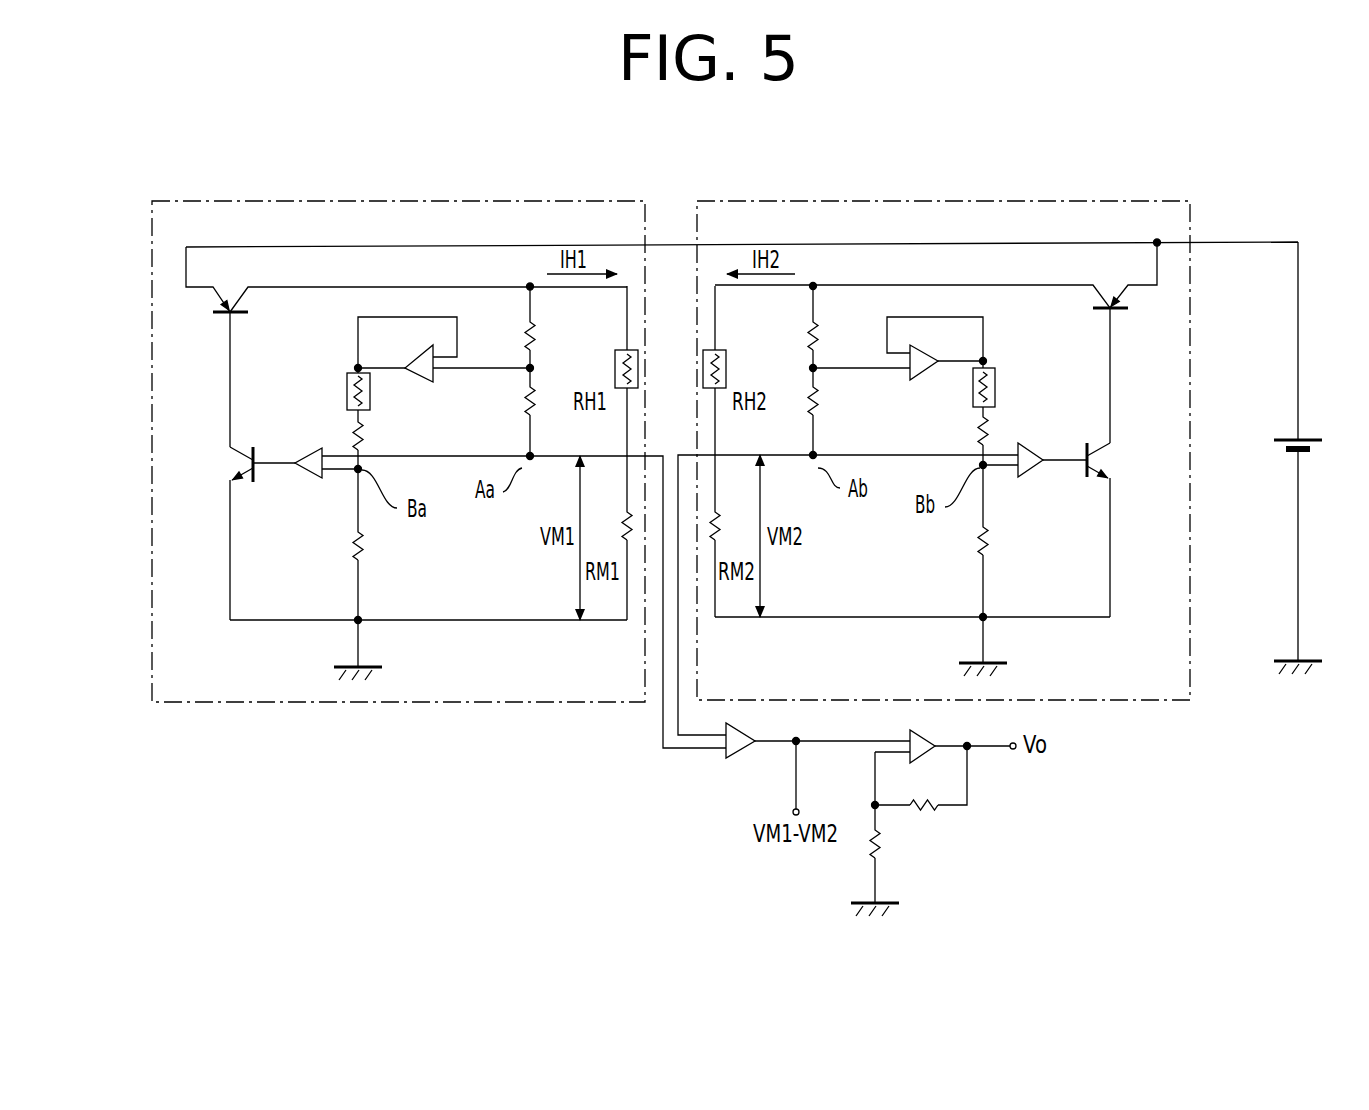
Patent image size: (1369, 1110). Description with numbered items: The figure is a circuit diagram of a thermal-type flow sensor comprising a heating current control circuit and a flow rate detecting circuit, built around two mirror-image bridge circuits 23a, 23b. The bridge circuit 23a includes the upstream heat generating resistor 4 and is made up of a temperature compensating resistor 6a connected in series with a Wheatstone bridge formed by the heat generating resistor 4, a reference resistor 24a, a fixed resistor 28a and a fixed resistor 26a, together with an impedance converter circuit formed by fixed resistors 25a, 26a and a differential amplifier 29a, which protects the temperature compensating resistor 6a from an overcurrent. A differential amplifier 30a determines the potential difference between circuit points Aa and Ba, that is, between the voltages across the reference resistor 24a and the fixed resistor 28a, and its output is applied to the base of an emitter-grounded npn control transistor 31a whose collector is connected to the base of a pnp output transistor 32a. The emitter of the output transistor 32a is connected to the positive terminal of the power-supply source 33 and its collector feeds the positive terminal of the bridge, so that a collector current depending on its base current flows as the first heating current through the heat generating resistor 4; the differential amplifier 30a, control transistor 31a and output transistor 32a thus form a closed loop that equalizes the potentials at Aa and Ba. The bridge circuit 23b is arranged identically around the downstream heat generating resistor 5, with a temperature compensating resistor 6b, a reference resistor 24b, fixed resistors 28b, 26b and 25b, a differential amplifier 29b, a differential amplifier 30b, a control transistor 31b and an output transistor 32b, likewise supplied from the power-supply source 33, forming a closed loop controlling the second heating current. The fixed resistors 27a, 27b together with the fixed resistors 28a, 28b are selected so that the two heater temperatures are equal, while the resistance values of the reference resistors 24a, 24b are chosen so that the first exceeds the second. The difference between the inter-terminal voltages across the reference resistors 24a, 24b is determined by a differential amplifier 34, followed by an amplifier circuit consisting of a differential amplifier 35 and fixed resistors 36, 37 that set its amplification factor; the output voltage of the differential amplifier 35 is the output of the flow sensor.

The bridge circuit 23a is at (197, 200).
The bridge circuit 23b is at (742, 200).
The upstream heat generating resistor 4 is at (615, 378).
The downstream heat generating resistor 5 is at (727, 377).
The temperature compensating resistor 6a is at (347, 393).
The temperature compensating resistor 6b is at (997, 387).
The reference resistor 24a is at (620, 520).
The reference resistor 24b is at (727, 520).
The fixed resistor 25a is at (522, 340).
The fixed resistor 25b is at (825, 340).
The fixed resistor 26a is at (522, 395).
The fixed resistor 26b is at (820, 395).
The fixed resistor 27a is at (350, 436).
The fixed resistor 27b is at (990, 427).
The fixed resistor 28a is at (355, 533).
The fixed resistor 28b is at (988, 530).
The differential amplifier 29a is at (413, 373).
The differential amplifier 29b is at (932, 370).
The differential amplifier 30a is at (295, 455).
The differential amplifier 30b is at (1042, 448).
The control transistor 31a is at (240, 468).
The control transistor 31b is at (1103, 465).
The output transistor 32a is at (250, 300).
The output transistor 32b is at (1090, 295).
The power-supply source 33 is at (1302, 436).
The differential amplifier 34 is at (741, 748).
The differential amplifier 35 is at (925, 738).
The fixed resistor 36 is at (920, 810).
The fixed resistor 37 is at (885, 850).